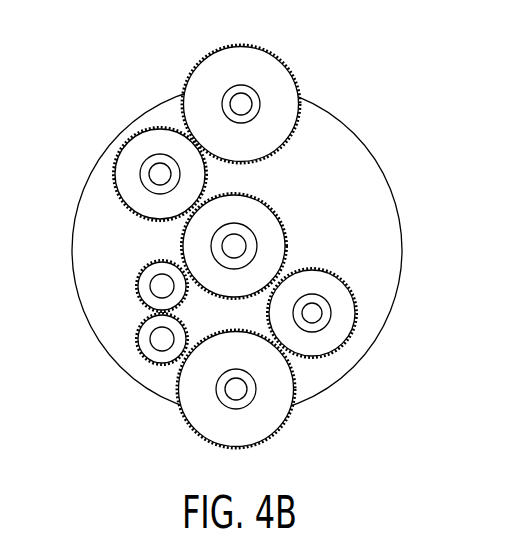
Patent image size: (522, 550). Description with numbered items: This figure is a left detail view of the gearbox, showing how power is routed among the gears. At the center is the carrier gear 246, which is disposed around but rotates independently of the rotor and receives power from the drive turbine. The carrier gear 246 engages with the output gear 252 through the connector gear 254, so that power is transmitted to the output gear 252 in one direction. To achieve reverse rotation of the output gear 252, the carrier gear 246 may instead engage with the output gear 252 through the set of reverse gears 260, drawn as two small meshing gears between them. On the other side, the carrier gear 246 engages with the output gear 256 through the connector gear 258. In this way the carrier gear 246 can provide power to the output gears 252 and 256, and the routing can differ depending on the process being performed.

The carrier gear 246 is at (288, 232).
The output gear 252 is at (175, 412).
The connector gear 254 is at (357, 333).
The output gear 256 is at (293, 72).
The connector gear 258 is at (130, 140).
The set of reverse gears 260 is at (138, 300).